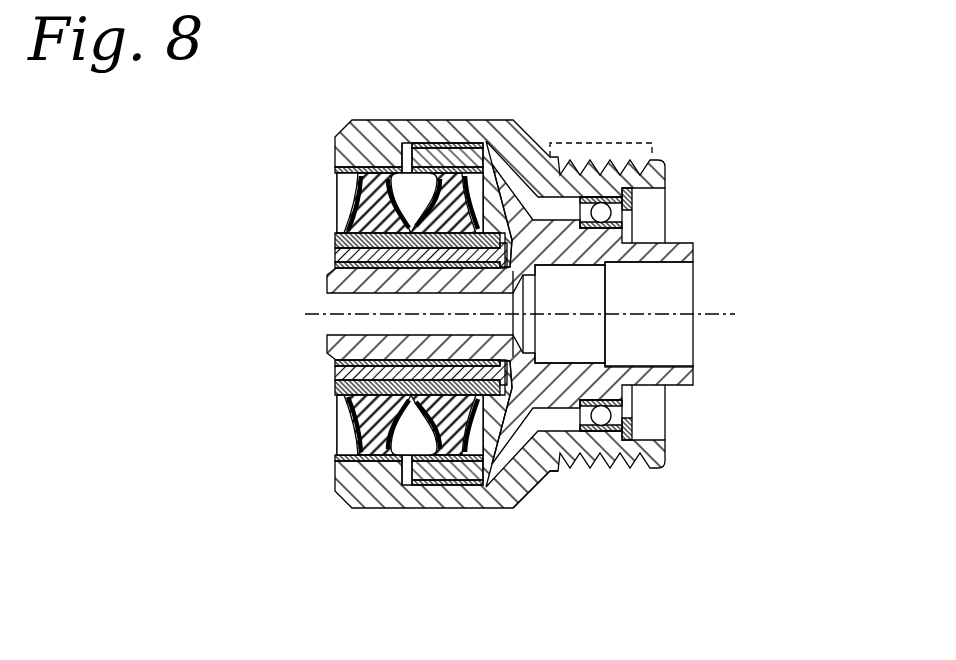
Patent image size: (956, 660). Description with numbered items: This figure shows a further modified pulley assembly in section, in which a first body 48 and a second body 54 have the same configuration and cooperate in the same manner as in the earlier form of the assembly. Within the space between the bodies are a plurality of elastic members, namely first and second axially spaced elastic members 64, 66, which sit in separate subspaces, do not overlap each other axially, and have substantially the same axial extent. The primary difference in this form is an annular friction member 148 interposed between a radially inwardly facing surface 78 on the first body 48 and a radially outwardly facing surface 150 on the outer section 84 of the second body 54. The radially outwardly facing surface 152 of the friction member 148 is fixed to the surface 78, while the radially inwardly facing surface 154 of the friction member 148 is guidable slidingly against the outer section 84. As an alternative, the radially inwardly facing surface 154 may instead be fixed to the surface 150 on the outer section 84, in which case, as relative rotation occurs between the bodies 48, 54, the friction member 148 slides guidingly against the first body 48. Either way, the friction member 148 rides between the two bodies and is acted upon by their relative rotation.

The first body 48 is at (383, 137).
The second body 54 is at (608, 246).
The first elastic member 64 is at (485, 174).
The second elastic member 66 is at (362, 202).
The radially inwardly facing surface 78 is at (520, 500).
The outer section 84 is at (451, 469).
The annular friction member 148 is at (456, 488).
The radially outwardly facing surface 150 is at (440, 486).
The radially outwardly facing surface of the friction member 152 is at (470, 488).
The radially inwardly facing surface of the friction member 154 is at (453, 482).